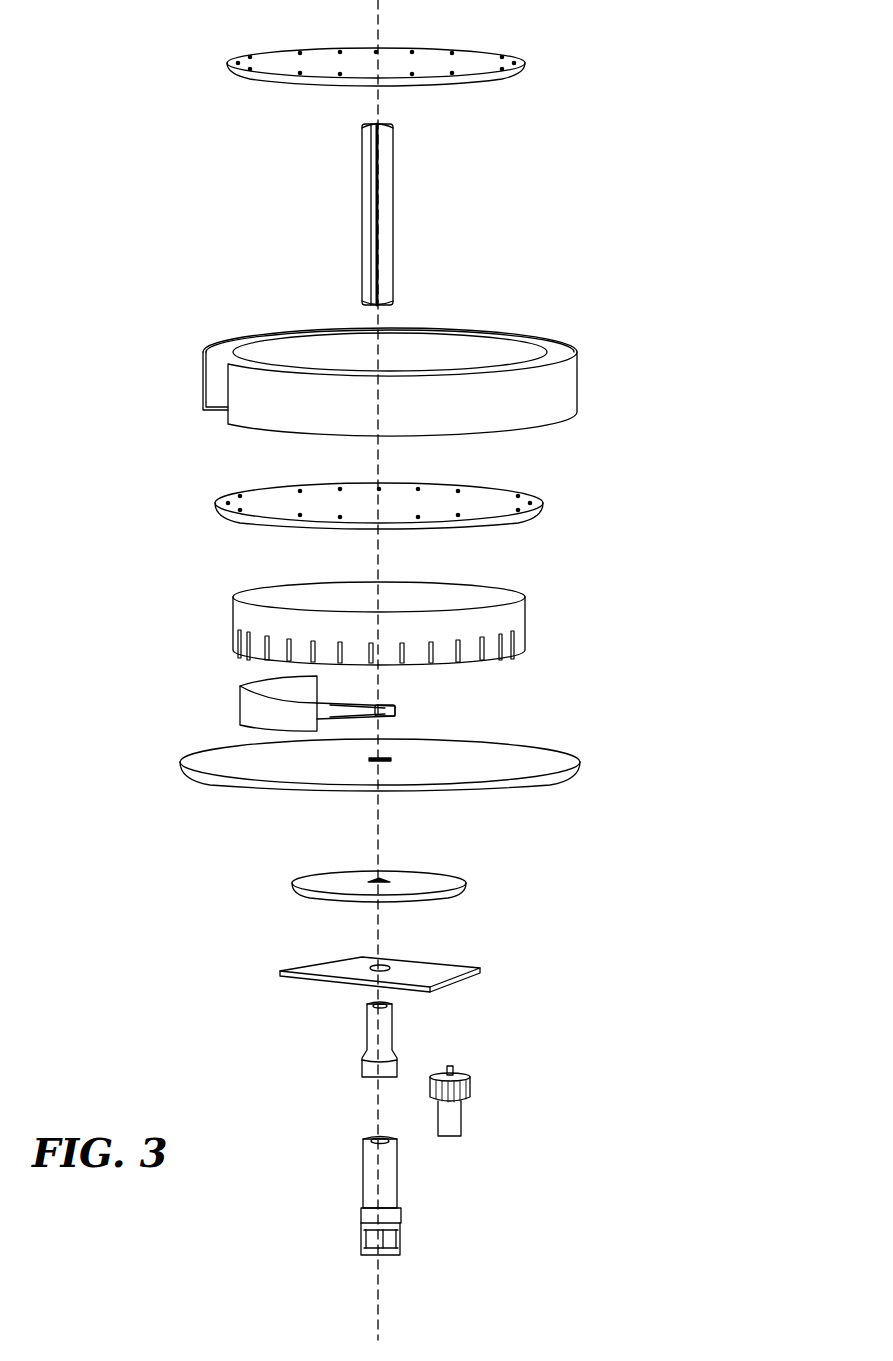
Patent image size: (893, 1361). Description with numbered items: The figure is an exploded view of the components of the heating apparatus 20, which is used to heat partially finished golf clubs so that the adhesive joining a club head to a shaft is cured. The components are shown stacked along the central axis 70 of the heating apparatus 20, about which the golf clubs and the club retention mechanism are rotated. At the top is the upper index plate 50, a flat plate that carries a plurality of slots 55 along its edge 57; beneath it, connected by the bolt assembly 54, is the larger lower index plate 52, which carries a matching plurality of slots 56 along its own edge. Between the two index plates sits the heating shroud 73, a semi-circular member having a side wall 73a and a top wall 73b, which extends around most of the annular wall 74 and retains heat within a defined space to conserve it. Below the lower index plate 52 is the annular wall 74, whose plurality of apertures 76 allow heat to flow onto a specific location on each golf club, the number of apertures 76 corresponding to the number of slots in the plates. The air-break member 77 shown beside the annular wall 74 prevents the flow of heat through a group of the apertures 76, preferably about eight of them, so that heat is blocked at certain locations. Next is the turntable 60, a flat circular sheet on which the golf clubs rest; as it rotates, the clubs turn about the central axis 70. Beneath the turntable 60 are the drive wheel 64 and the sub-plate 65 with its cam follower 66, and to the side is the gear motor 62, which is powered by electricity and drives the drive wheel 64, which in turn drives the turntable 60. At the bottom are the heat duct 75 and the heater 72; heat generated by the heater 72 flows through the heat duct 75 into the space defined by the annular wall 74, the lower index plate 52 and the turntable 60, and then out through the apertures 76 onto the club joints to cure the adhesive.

The heating apparatus 20 is at (572, 285).
The upper index plate 50 is at (495, 52).
The lower index plate 52 is at (485, 503).
The bolt assembly 54 is at (393, 207).
The slots 55 is at (505, 78).
The slots 56 is at (236, 522).
The edge 57 is at (247, 78).
The turntable 60 is at (545, 757).
The gear motor 62 is at (462, 1117).
The drive wheel 64 is at (440, 879).
The sub-plate 65 is at (432, 976).
The cam follower 66 is at (300, 978).
The central axis 70 is at (378, 5).
The heater 72 is at (372, 1257).
The heating shroud 73 is at (448, 367).
The side wall 73a is at (588, 349).
The top wall 73b is at (555, 345).
The annular wall 74 is at (398, 607).
The heat duct 75 is at (365, 1063).
The apertures 76 is at (255, 649).
The air-break member 77 is at (250, 710).